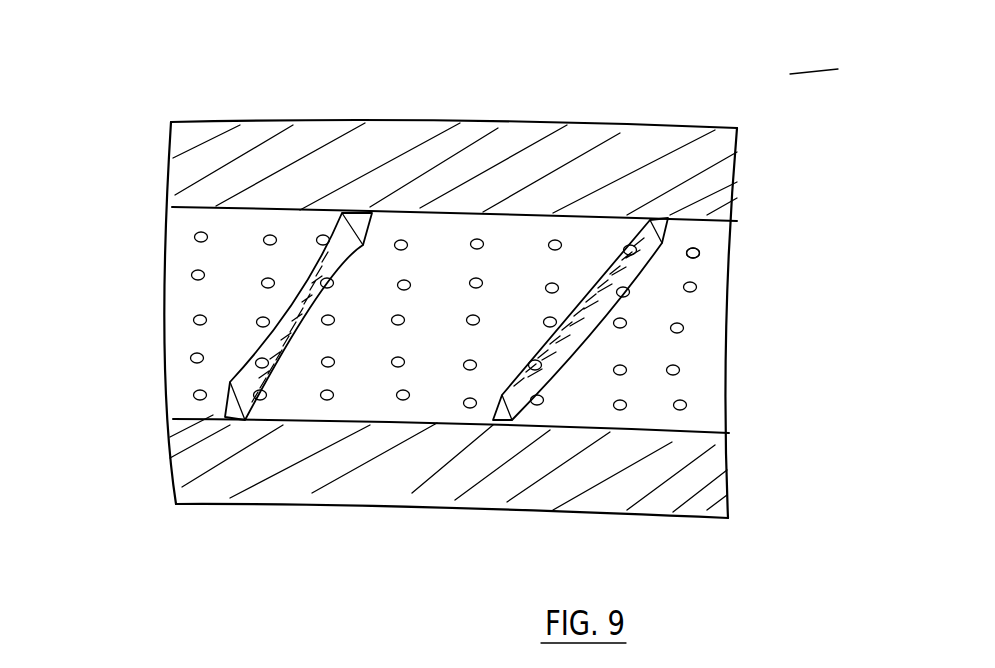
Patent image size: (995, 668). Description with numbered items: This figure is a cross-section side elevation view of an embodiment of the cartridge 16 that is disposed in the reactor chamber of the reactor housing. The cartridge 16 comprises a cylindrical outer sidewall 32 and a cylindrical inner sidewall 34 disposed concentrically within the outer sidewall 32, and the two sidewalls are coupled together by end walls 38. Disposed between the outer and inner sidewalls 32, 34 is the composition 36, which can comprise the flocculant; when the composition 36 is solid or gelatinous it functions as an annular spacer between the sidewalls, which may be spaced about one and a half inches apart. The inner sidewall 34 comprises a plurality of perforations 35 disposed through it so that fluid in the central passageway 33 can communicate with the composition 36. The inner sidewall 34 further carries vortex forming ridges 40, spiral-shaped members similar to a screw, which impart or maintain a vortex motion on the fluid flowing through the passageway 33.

The cartridge 16 is at (813, 97).
The cylindrical outer sidewall 32 is at (447, 304).
The passageway 33 is at (192, 254).
The cylindrical inner sidewall 34 is at (693, 271).
The perforations 35 is at (180, 352).
The composition 36 is at (278, 143).
The end walls 38 is at (170, 167).
The vortex forming ridges 40 is at (322, 263).